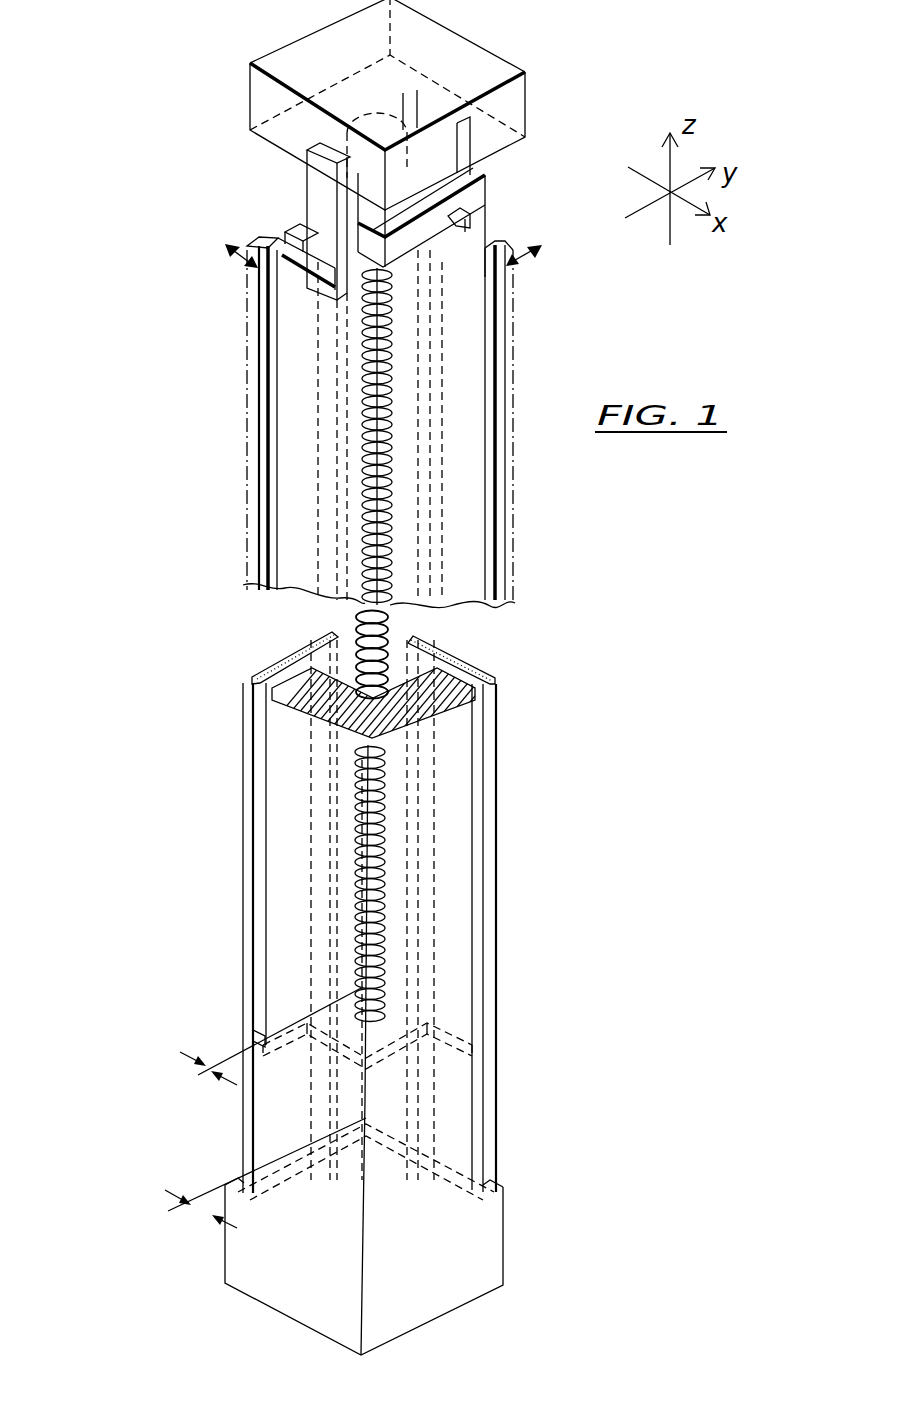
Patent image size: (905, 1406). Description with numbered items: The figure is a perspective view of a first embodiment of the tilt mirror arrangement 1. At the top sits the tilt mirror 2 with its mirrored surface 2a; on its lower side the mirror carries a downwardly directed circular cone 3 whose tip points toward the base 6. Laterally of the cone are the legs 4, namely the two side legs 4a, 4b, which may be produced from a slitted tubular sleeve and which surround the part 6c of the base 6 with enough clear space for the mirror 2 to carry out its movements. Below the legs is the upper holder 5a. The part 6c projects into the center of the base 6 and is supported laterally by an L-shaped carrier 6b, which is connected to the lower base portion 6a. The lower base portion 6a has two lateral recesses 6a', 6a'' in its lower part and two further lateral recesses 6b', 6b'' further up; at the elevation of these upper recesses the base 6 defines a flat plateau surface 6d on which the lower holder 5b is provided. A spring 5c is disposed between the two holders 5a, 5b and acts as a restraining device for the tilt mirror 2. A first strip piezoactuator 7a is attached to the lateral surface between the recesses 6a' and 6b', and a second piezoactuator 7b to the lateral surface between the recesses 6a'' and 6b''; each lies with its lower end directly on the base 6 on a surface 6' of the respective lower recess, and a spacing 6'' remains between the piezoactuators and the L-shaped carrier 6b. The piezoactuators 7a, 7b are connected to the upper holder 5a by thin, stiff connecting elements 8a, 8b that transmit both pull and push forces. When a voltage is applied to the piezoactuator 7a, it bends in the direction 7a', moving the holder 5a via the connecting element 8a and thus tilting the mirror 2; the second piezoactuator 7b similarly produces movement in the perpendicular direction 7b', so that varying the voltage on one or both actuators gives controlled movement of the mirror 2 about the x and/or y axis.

The tilt mirror arrangement 1 is at (166, 51).
The tilt mirror 2 is at (508, 108).
The mirrored surface 2a is at (476, 64).
The circular cone 3 is at (345, 118).
The bracket 4 is at (460, 143).
The side leg 4a is at (436, 132).
The side leg 4b is at (300, 183).
The holder 5a is at (375, 283).
The lower holder 5b is at (395, 1022).
The spring 5c is at (392, 618).
The base 6 is at (314, 802).
The surface of the recess 6' is at (247, 1182).
The spacing 6'' is at (255, 1055).
The lower base portion 6a is at (389, 1270).
The lateral recess 6a' is at (519, 1159).
The lateral recess 6a'' is at (211, 1168).
The L-shaped carrier 6b is at (400, 705).
The lateral recess 6b' is at (409, 1044).
The lateral recess 6b'' is at (225, 1009).
The part of the base 6c is at (462, 178).
The flat plateau surface 6d is at (415, 1045).
The first strip piezoactuator 7a is at (516, 716).
The direction 7a' is at (545, 238).
The second piezoactuator 7b is at (234, 715).
The direction 7b' is at (221, 272).
The connecting element 8a is at (425, 270).
The connecting element 8b is at (305, 216).